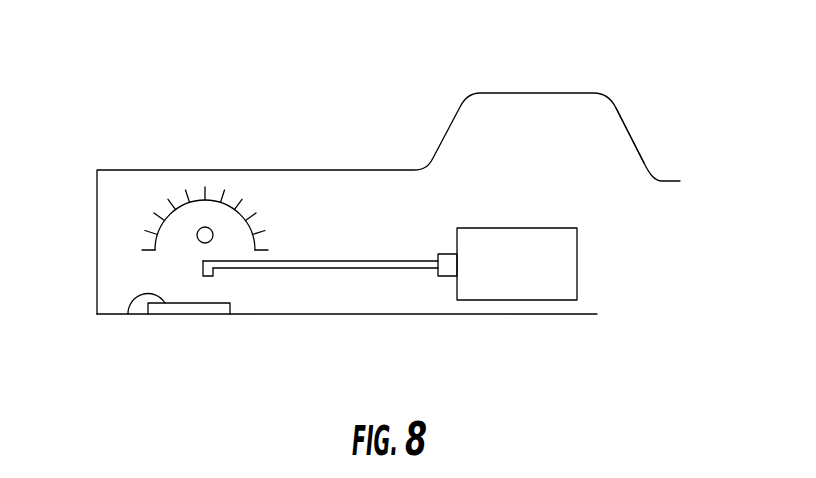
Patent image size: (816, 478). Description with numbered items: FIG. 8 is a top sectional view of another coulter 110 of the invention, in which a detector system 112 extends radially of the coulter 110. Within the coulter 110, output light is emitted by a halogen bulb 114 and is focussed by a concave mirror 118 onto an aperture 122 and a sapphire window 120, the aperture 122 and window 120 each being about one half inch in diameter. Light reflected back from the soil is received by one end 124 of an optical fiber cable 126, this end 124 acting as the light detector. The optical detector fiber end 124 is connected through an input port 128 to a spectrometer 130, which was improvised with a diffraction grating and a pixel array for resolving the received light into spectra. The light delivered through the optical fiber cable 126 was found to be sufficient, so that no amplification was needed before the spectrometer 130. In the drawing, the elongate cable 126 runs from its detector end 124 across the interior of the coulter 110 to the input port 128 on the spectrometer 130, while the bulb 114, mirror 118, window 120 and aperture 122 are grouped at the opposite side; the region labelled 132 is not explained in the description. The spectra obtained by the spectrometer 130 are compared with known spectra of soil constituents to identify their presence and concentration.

The coulter 110 is at (303, 171).
The detector system 112 is at (312, 270).
The halogen bulb 114 is at (198, 241).
The concave mirror 118 is at (181, 204).
The sapphire window 120 is at (128, 314).
The aperture 122 is at (195, 315).
The end of optical fiber cable 124 is at (214, 270).
The optical fiber cable 126 is at (355, 260).
The input port 128 is at (450, 277).
The spectrometer 130 is at (490, 285).
The housing wall 132 is at (628, 125).